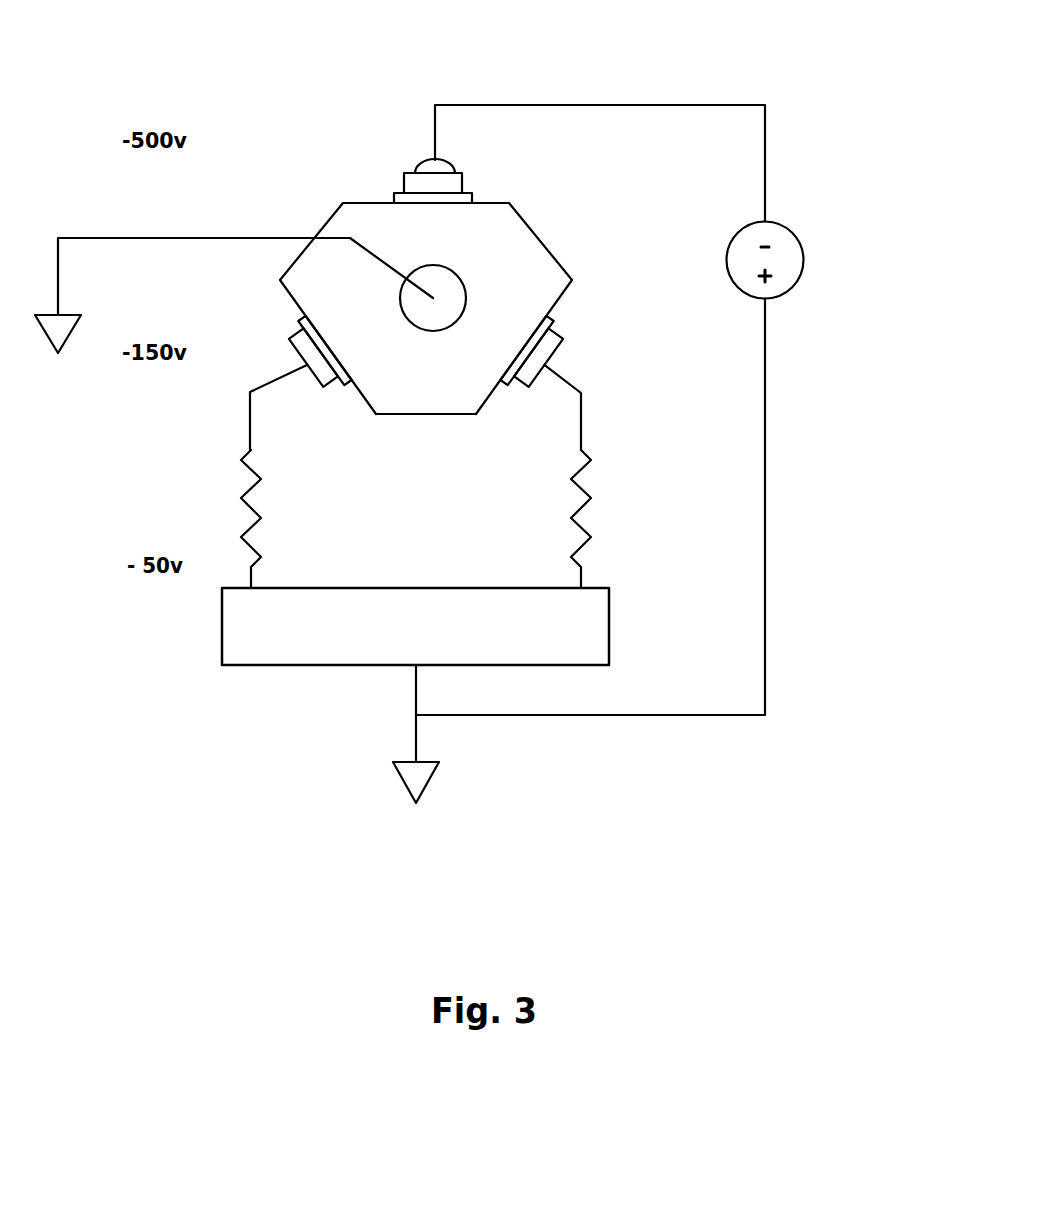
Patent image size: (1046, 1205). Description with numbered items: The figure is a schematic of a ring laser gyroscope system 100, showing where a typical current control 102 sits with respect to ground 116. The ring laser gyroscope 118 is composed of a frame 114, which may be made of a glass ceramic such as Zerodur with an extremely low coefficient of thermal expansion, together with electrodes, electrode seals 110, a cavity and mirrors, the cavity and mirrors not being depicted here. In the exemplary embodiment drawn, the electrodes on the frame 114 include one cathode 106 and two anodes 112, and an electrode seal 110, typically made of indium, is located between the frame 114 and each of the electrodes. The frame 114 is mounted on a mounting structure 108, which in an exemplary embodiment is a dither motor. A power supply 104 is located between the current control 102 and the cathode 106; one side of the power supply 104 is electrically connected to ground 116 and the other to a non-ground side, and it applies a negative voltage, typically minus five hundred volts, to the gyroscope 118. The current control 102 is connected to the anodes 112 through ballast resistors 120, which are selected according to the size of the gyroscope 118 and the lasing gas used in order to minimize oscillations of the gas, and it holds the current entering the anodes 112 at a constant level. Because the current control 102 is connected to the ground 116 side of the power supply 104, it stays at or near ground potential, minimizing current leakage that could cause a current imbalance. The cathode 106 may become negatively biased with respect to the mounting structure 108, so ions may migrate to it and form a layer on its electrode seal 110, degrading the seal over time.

The ring laser gyroscope system 100 is at (825, 24).
The current control 102 is at (610, 627).
The power supply 104 is at (795, 287).
The cathode 106 is at (462, 182).
The mounting structure 108 is at (433, 265).
The electrode seals 110 is at (397, 196).
The anodes 112 is at (325, 388).
The frame 114 is at (417, 373).
The ground 116 is at (425, 788).
The ring laser gyroscope 118 is at (569, 229).
The ballast resistors 120 is at (243, 498).